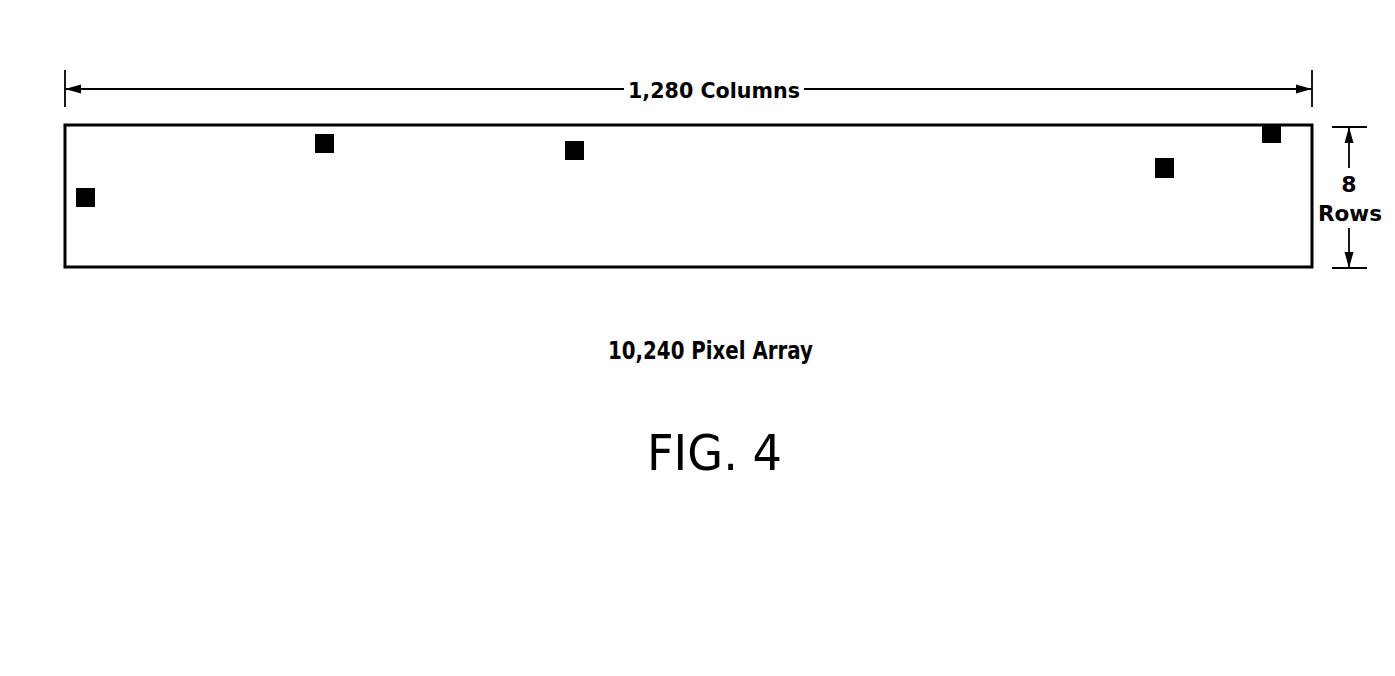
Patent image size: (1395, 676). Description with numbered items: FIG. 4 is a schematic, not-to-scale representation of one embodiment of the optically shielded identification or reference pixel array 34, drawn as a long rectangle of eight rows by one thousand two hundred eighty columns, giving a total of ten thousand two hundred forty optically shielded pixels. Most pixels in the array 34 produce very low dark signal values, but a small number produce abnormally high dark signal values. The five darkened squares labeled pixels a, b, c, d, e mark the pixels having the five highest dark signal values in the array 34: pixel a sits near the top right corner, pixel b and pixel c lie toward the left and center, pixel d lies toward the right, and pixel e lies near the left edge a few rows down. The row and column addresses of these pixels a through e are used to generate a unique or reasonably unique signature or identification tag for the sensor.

The optically shielded pixel array 34 is at (1238, 106).
The darkened pixel a is at (1272, 144).
The darkened pixel b is at (315, 142).
The darkened pixel c is at (565, 147).
The darkened pixel d is at (1155, 165).
The darkened pixel e is at (96, 195).